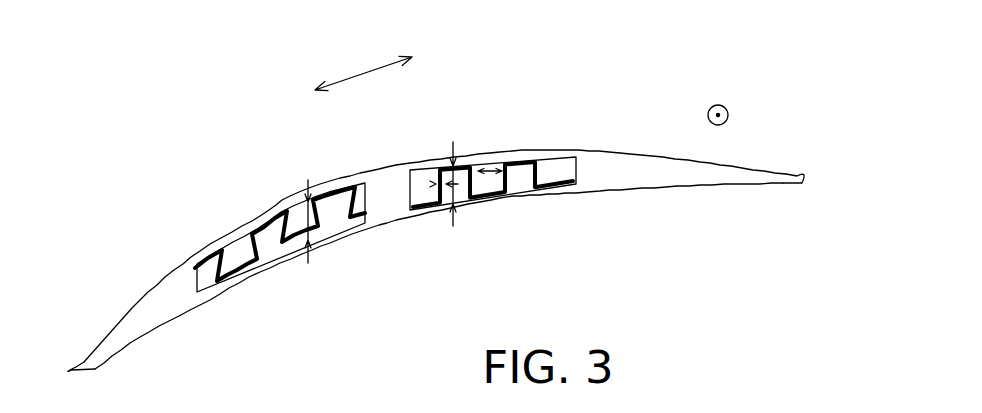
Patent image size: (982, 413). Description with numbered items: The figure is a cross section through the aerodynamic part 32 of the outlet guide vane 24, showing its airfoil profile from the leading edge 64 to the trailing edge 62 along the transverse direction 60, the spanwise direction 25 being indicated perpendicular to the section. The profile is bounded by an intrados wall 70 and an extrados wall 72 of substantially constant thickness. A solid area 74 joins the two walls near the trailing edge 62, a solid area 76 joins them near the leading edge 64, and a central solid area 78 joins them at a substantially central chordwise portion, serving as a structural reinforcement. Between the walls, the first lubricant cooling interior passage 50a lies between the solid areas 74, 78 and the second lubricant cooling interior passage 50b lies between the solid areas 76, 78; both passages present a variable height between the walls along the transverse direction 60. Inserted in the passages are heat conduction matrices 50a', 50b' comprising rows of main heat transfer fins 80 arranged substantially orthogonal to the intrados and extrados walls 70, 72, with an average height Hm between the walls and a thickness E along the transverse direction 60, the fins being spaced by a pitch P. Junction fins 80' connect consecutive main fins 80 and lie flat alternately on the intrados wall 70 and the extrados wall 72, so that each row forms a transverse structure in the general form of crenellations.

The outlet guide vane 24 is at (220, 221).
The spanwise direction 25 is at (719, 105).
The aerodynamic part 32 is at (509, 147).
The first lubricant cooling interior passage 50a is at (493, 214).
The heat conduction matrix 50a' is at (489, 151).
The second lubricant cooling interior passage 50b is at (280, 269).
The heat conduction matrix 50b' is at (281, 197).
The transverse direction 60 is at (353, 72).
The trailing edge 62 is at (803, 178).
The leading edge 64 is at (85, 362).
The intrados wall 70 is at (334, 236).
The extrados wall 72 is at (291, 213).
The solid area 74 is at (647, 175).
The solid area 76 is at (153, 313).
The central solid area 78 is at (383, 182).
The main heat transfer fins 80 is at (386, 257).
The junction fins 80' is at (384, 183).
The average height Hm is at (300, 262).
The spacing/pitch P is at (490, 167).
The thickness E is at (436, 184).